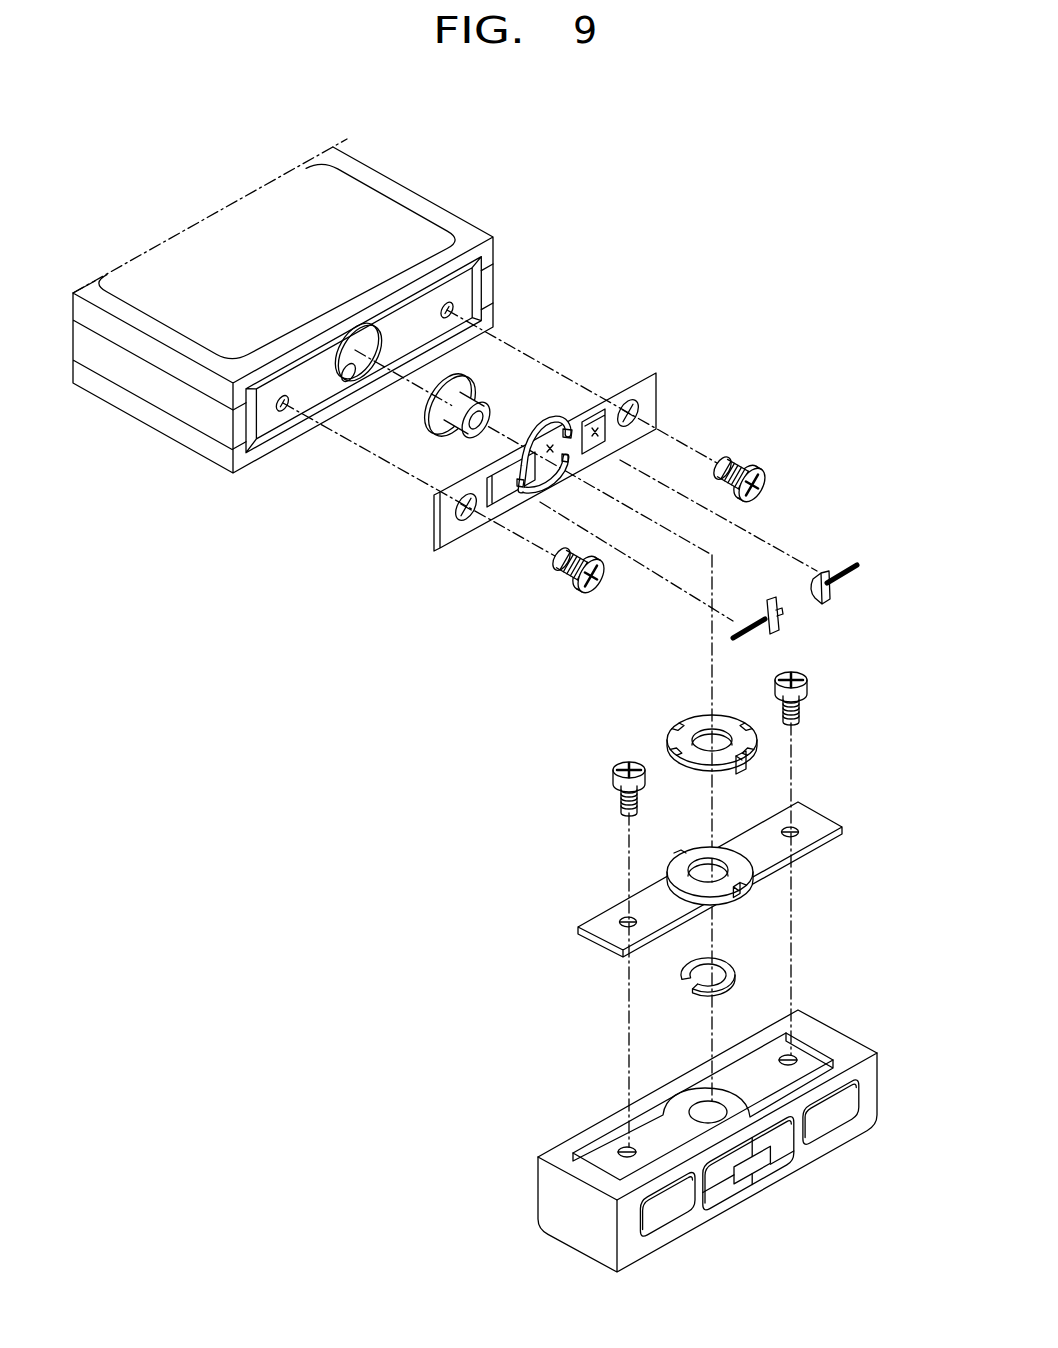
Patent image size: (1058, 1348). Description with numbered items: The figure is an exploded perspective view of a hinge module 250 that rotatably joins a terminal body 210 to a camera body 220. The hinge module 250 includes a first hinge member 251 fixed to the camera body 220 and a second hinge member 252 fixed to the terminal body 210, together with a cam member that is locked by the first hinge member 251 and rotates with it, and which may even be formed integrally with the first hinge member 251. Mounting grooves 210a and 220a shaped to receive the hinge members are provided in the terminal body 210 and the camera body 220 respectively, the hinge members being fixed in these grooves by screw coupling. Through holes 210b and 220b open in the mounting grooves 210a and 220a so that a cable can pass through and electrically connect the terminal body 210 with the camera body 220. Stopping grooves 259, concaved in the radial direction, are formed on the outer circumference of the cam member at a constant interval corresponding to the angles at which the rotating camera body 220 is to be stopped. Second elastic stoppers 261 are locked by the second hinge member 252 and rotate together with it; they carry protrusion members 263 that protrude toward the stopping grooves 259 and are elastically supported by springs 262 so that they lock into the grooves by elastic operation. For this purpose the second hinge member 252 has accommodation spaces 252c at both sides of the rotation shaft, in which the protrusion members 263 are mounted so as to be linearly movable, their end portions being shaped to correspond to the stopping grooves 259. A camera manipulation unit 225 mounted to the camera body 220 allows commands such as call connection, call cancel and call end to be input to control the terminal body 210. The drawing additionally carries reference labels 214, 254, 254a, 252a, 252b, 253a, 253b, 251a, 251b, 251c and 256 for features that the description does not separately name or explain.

The terminal body 210 is at (327, 305).
The cover panel 214 is at (350, 192).
The mounting groove 210a is at (462, 297).
The through hole 210b is at (367, 348).
The bushing 254 is at (519, 374).
The bore of bushing 254a is at (490, 416).
The hinge module 250 is at (452, 608).
The second hinge member 252 is at (602, 497).
The slots of fixing plate 252a is at (552, 450).
The screw holes of fixing plate 252b is at (633, 399).
The accommodation spaces 252c is at (572, 432).
The springs 262 is at (840, 583).
The second elastic stoppers 261 is at (829, 603).
The protrusion members 263 is at (780, 617).
The friction washer 253a is at (732, 726).
The bent tab of washer 253b is at (747, 770).
The stopping grooves 259 is at (683, 722).
The first hinge member 251 is at (671, 837).
The boss of hinge plate 251a is at (740, 870).
The screw holes of hinge plate 251b is at (797, 832).
The notch of boss 251c is at (742, 893).
The snap ring 256 is at (681, 977).
The camera body 220 is at (680, 1154).
The mounting groove 220a is at (608, 1155).
The through hole 220b is at (705, 1115).
The camera manipulation unit 225 is at (770, 1170).